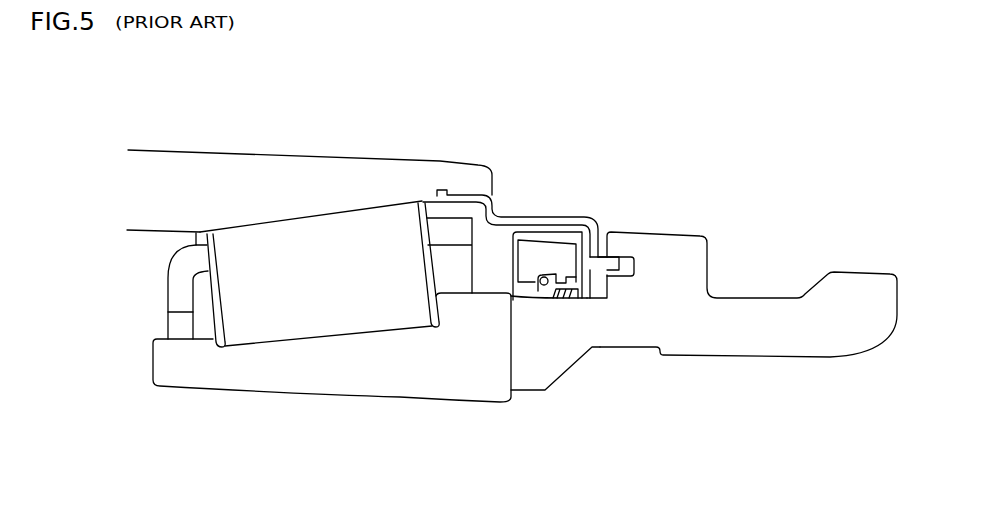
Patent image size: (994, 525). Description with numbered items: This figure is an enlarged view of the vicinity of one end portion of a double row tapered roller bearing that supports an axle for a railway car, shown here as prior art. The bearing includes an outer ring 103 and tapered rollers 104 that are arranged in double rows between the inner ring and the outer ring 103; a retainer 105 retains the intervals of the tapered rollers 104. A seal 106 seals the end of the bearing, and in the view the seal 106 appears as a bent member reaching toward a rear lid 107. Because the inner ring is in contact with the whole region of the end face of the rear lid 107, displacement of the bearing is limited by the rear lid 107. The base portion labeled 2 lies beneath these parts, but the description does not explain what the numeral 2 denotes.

The base member 2 is at (359, 372).
The outer ring 103 is at (184, 192).
The tapered rollers 104 is at (325, 266).
The retainer 105 is at (178, 297).
The seal 106 is at (545, 222).
The rear lid 107 is at (660, 263).